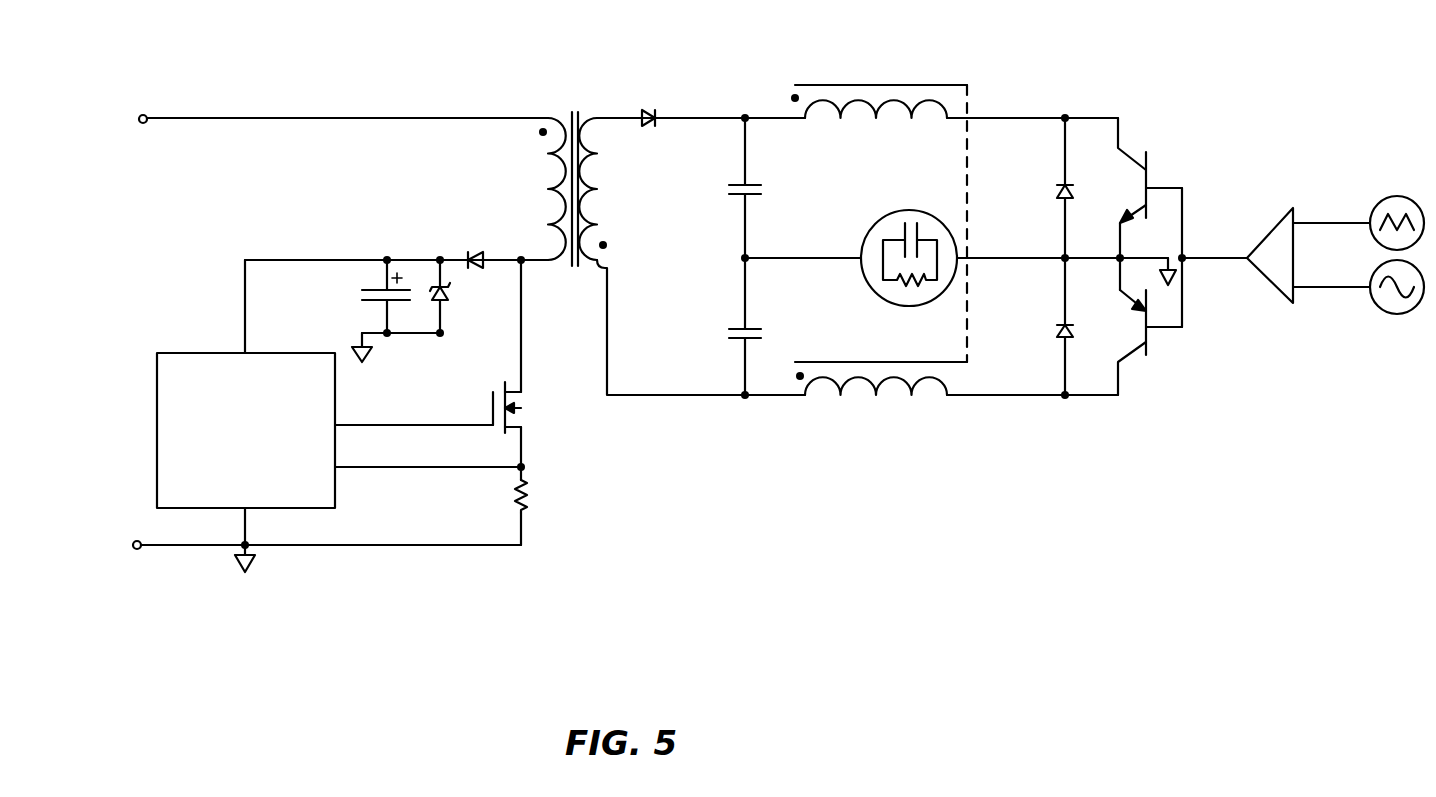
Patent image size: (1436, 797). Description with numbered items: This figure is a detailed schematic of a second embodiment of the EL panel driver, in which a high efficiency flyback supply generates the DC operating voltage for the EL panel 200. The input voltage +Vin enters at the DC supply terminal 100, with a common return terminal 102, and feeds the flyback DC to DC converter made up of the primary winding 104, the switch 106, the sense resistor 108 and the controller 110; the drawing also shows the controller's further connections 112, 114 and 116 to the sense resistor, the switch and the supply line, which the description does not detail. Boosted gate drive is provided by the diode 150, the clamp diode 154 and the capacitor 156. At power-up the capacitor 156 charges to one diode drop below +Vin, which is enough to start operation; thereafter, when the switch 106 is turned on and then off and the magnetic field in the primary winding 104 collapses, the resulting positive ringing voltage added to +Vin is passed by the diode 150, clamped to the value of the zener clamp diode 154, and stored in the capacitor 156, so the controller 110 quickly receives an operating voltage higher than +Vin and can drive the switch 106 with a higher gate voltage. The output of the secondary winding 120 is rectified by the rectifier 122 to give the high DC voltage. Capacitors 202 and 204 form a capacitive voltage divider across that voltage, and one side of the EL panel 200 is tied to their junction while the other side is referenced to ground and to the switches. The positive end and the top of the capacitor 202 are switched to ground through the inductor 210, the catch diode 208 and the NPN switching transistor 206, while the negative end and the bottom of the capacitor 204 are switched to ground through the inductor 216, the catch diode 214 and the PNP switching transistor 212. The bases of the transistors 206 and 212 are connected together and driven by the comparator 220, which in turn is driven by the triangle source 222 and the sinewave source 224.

The DC supply 100 is at (138, 114).
The common (Com) terminal 102 is at (130, 540).
The primary winding 104 is at (555, 110).
The switch 106 is at (527, 400).
The sense resistor 108 is at (535, 497).
The controller 110 is at (157, 365).
The current sense feedback line 112 is at (460, 470).
The gate drive line 114 is at (365, 423).
The PWM supply line 116 is at (245, 302).
The secondary winding 120 is at (613, 185).
The rectifier 122 is at (648, 108).
The diode 150 is at (488, 243).
The clamp diode 154 is at (437, 280).
The capacitor 156 is at (382, 280).
The EL panel 200 is at (865, 210).
The capacitor 202 is at (728, 182).
The capacitor 204 is at (723, 322).
The NPN switching transistor 206 is at (1152, 148).
The diode 208 is at (1057, 178).
The inductor 210 is at (808, 78).
The PNP switching transistor 212 is at (1155, 352).
The diode 214 is at (1055, 333).
The inductor 216 is at (828, 405).
The comparator 220 is at (1272, 218).
The triangle source 222 is at (1385, 198).
The sinewave source 224 is at (1383, 312).